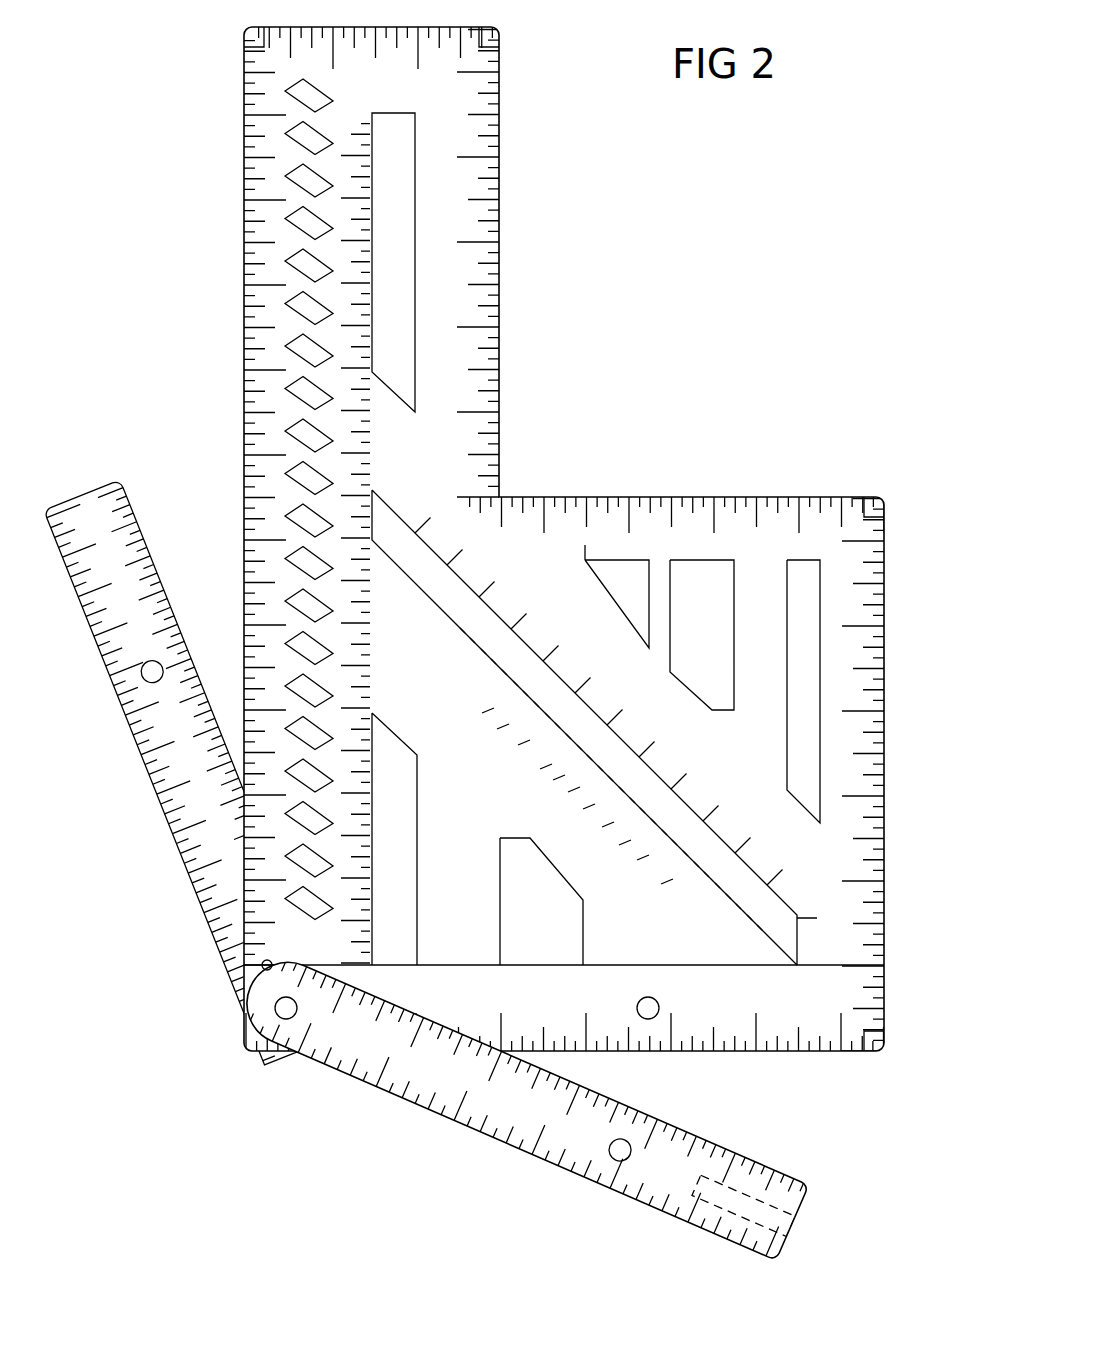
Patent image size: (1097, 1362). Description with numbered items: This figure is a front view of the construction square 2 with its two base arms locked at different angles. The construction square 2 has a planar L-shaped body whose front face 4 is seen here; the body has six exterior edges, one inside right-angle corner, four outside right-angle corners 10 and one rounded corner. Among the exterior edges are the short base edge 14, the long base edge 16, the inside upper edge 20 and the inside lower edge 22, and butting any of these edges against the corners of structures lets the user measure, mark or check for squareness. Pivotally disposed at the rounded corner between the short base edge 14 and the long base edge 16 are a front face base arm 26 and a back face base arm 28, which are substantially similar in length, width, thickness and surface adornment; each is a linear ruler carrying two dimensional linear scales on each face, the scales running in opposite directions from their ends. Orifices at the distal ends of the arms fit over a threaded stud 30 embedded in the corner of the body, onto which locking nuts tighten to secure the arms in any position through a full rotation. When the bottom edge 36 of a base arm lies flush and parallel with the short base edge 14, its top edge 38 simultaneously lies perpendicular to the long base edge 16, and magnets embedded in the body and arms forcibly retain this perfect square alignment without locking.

The construction square 2 is at (737, 291).
The front face 4 is at (497, 118).
The outside 90-degree corners 10 is at (499, 27).
The short base edge 14 is at (700, 1055).
The long base edge 16 is at (243, 233).
The inside upper edge 20 is at (503, 300).
The inside lower edge 22 is at (700, 496).
The front face base arm 26 is at (541, 1113).
The back face base arm 28 is at (96, 493).
The threaded stud 30 is at (290, 1014).
The bottom edge 36 is at (743, 1205).
The top edge 38 is at (528, 1084).